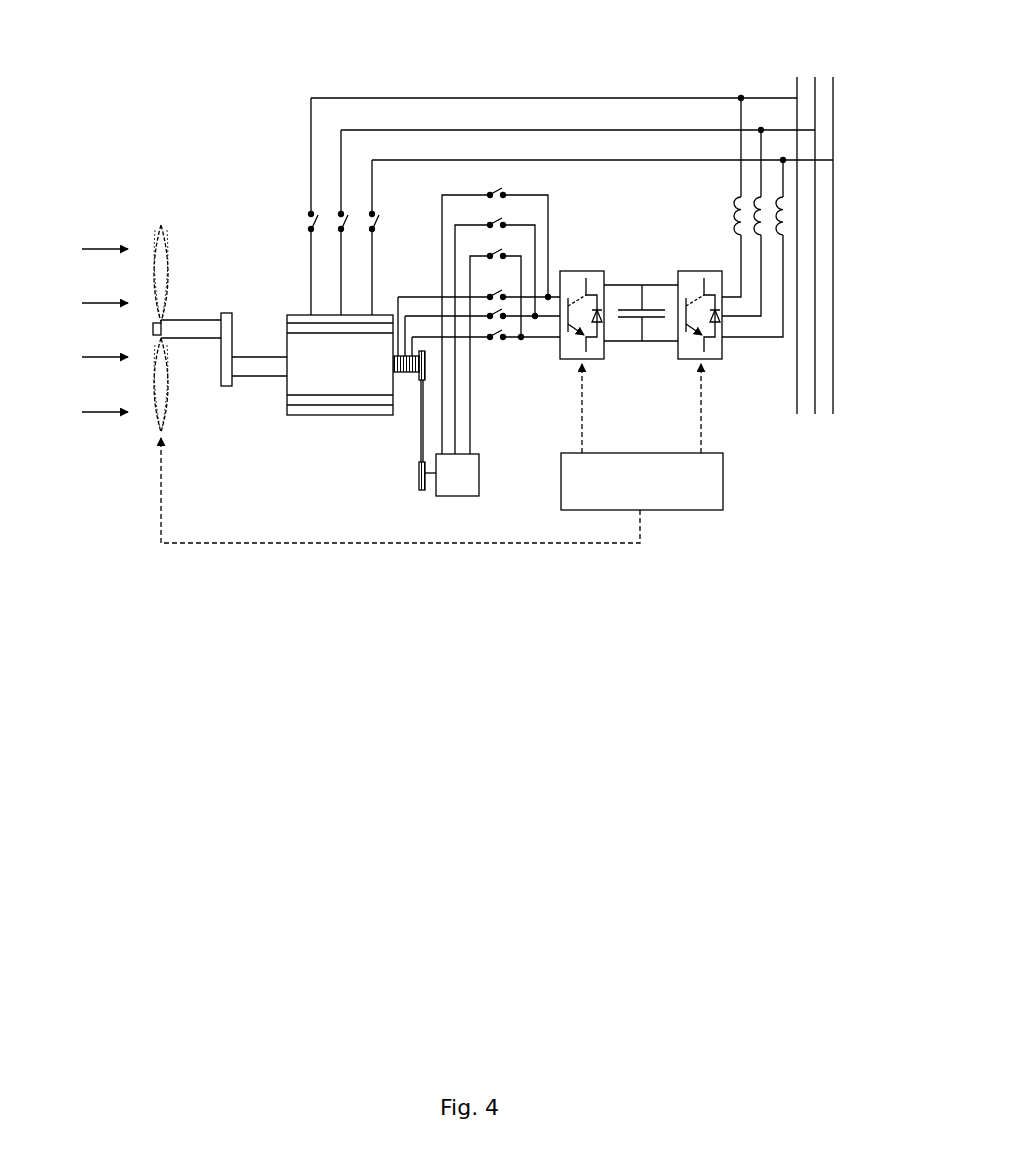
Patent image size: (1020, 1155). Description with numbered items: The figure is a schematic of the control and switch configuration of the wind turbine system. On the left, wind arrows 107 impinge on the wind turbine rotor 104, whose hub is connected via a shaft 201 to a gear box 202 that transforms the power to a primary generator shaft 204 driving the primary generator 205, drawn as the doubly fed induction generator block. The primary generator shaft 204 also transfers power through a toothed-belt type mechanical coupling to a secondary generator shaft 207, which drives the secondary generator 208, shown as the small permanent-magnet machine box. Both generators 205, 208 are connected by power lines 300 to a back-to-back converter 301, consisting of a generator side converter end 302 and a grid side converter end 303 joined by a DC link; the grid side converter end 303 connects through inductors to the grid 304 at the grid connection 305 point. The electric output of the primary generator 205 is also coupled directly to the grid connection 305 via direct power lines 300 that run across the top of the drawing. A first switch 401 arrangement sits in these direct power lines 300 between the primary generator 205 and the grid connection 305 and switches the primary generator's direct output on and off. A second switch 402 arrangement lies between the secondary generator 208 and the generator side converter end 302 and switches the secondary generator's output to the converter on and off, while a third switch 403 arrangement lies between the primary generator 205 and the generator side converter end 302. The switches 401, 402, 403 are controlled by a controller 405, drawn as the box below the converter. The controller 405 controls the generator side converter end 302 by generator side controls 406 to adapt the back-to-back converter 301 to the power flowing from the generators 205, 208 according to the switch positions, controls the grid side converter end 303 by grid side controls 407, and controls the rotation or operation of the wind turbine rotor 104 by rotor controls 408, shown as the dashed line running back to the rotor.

The wind turbine rotor 104 is at (157, 208).
The wind 107 is at (118, 245).
The shaft 201 is at (185, 340).
The gear box 202 is at (232, 357).
The primary generator shaft 204 is at (238, 377).
The primary generator 205 is at (310, 410).
The secondary generator shaft 207 is at (432, 497).
The secondary generator 208 is at (470, 474).
The power lines 300 is at (522, 145).
The back-to-back converter 301 is at (672, 265).
The generator side converter end 302 is at (599, 373).
The grid side converter end 303 is at (713, 373).
The grid 304 is at (812, 64).
The grid connection 305 is at (828, 116).
The first switch 401 is at (290, 216).
The second switch 402 is at (533, 211).
The third switch 403 is at (496, 352).
The controller 405 is at (683, 505).
The generator side controls 406 is at (587, 428).
The grid side controls 407 is at (700, 428).
The rotor controls 408 is at (537, 545).